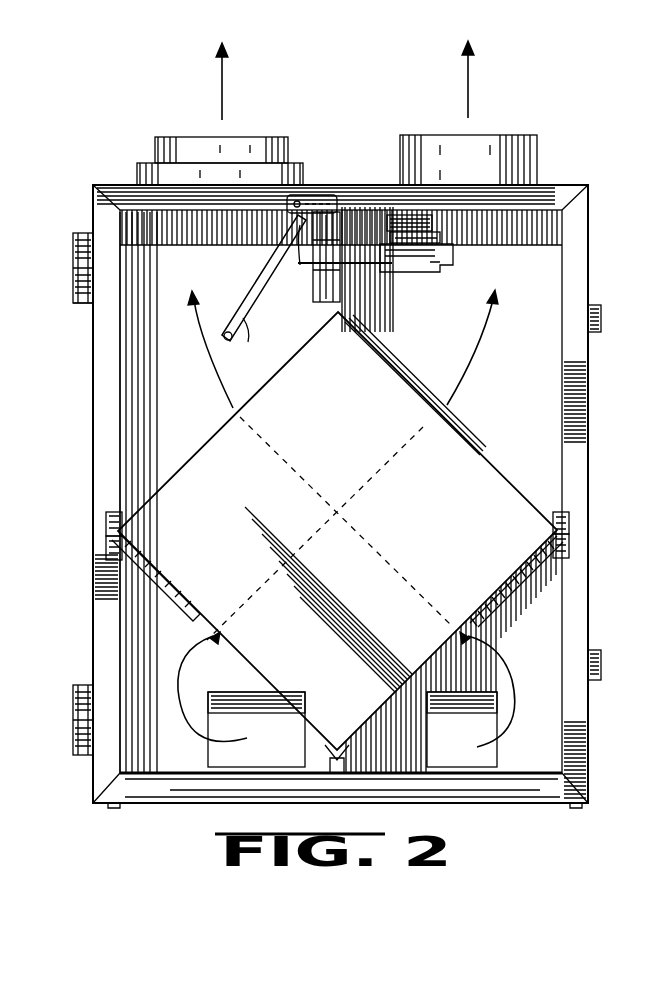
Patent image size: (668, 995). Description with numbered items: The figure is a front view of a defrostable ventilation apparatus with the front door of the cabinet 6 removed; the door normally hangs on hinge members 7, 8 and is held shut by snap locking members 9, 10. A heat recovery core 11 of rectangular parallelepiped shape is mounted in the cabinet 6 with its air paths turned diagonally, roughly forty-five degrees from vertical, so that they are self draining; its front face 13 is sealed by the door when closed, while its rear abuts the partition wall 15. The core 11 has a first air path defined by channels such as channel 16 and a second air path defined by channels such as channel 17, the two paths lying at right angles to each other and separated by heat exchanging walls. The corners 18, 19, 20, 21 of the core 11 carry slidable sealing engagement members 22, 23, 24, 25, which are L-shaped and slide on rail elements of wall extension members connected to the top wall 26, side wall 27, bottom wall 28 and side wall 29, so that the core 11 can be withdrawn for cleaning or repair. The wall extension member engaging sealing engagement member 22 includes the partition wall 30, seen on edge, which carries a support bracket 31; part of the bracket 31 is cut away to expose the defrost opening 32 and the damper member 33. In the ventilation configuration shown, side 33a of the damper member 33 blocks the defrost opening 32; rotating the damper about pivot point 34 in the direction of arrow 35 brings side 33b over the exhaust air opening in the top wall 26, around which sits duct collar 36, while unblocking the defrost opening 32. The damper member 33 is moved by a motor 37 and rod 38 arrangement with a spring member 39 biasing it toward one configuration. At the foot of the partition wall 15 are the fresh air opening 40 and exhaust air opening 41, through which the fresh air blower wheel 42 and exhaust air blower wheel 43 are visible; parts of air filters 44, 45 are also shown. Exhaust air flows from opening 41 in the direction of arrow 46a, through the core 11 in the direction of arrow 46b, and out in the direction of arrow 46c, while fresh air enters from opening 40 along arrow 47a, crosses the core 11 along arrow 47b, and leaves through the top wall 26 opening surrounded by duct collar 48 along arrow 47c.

The cabinet 6 is at (590, 213).
The hinge member 7 is at (603, 322).
The hinge member 8 is at (603, 662).
The snap locking member 9 is at (73, 262).
The snap locking member 10 is at (78, 692).
The heat recovery core 11 is at (200, 454).
The front face 13 is at (463, 452).
The partition wall 15 is at (535, 452).
The channel 16 is at (270, 575).
The channel 17 is at (385, 555).
The corner 18 is at (382, 332).
The corner 19 is at (112, 518).
The corner 20 is at (337, 732).
The corner 21 is at (574, 520).
The sealing engagement member 22 is at (378, 318).
The sealing engagement member 23 is at (108, 532).
The sealing engagement member 24 is at (325, 775).
The sealing engagement member 25 is at (578, 540).
The top wall 26 is at (112, 188).
The side wall 27 is at (86, 303).
The bottom wall 28 is at (372, 808).
The side wall 29 is at (590, 695).
The partition wall 30 is at (348, 207).
The support bracket 31 is at (331, 200).
The defrost opening 32 is at (282, 244).
The damper member 33 is at (212, 356).
The damper side 33a is at (296, 303).
The damper side 33b is at (226, 318).
The pivot point 34 is at (300, 196).
The arrow 35 is at (221, 291).
The duct collar 36 is at (162, 150).
The motor 37 is at (410, 215).
The rod 38 is at (428, 262).
The spring member 39 is at (458, 256).
The fresh air opening 40 is at (242, 742).
The exhaust air opening 41 is at (485, 755).
The fresh air blower wheel 42 is at (283, 712).
The exhaust air blower wheel 43 is at (450, 710).
The air filter 44 is at (150, 582).
The air filter 45 is at (575, 565).
The arrow 46a is at (520, 710).
The arrow 46b is at (300, 302).
The arrow 46c is at (220, 92).
The arrow 47a is at (185, 716).
The arrow 47b is at (476, 365).
The arrow 47c is at (472, 78).
The duct collar 48 is at (540, 150).